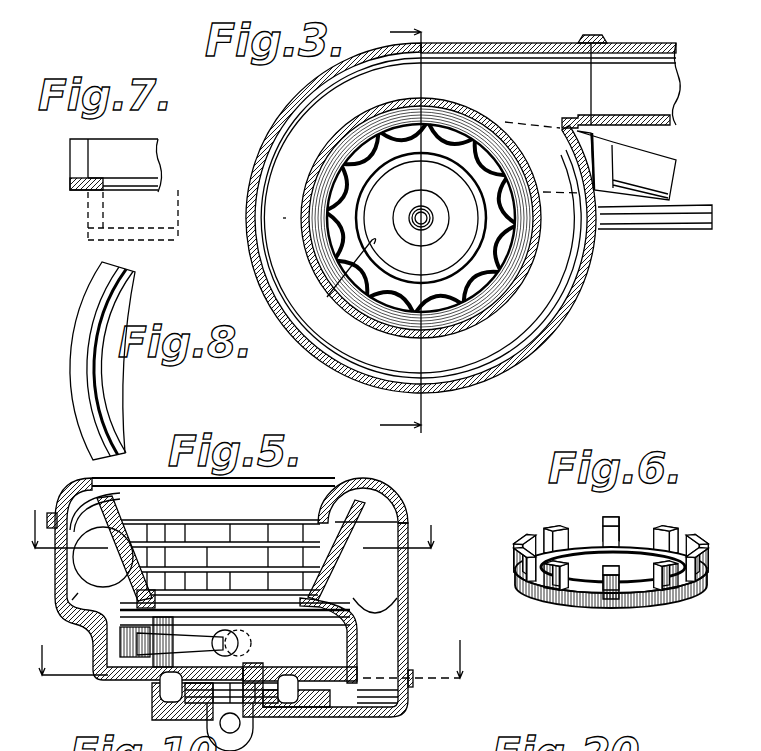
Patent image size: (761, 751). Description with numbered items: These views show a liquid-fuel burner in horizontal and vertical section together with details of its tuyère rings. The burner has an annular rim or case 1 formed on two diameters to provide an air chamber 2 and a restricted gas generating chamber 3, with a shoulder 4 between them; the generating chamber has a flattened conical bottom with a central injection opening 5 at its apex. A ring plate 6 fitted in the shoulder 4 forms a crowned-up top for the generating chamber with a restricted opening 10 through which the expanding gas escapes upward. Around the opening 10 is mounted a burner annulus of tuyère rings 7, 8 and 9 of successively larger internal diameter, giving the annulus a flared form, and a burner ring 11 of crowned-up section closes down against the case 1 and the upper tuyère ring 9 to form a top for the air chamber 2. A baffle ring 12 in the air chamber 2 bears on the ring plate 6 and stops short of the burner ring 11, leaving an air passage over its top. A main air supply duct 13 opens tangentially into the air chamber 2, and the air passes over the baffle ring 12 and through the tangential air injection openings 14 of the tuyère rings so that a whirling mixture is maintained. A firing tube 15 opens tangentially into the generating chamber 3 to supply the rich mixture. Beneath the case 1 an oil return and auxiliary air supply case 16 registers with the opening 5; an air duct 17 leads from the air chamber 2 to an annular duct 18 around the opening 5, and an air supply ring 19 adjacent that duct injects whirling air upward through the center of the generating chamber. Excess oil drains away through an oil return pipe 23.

In FIG. 3, the annular rim or case 1 is at (520, 362).
In FIG. 5, the annular rim or case 1 is at (92, 610).
In FIG. 3, the air chamber 2 is at (284, 218).
In FIG. 5, the air chamber 2 is at (78, 593).
In FIG. 5, the gas generating chamber 3 is at (92, 697).
In FIG. 5, the shoulder 4 is at (110, 623).
In FIG. 3, the injection opening 5 is at (452, 216).
In FIG. 5, the injection opening 5 is at (230, 640).
In FIG. 5, the ring plate 6 is at (347, 610).
In FIG. 7, the tuyère ring 7 is at (98, 207).
In FIG. 6, the tuyère ring 7 is at (633, 600).
In FIG. 5, the tuyère ring 7 is at (302, 583).
In FIG. 3, the tuyère ring 8 is at (458, 292).
In FIG. 7, the tuyère ring 8 is at (77, 151).
In FIG. 8, the tuyère ring 8 is at (82, 310).
In FIG. 5, the tuyère ring 8 is at (312, 560).
In FIG. 5, the tuyère ring 9 is at (312, 532).
In FIG. 3, the opening 10 is at (342, 280).
In FIG. 5, the opening 10 is at (305, 610).
In FIG. 5, the burner ring 11 is at (372, 483).
In FIG. 3, the baffle ring 12 is at (318, 146).
In FIG. 5, the baffle ring 12 is at (365, 507).
In FIG. 3, the main air supply duct 13 is at (647, 98).
In FIG. 5, the main air supply duct 13 is at (62, 572).
In FIG. 3, the air injection openings 14 is at (333, 238).
In FIG. 6, the air injection openings 14 is at (654, 527).
In FIG. 5, the air injection openings 14 is at (153, 530).
In FIG. 3, the firing tube 15 is at (648, 179).
In FIG. 5, the firing tube 15 is at (153, 684).
In FIG. 3, the oil return and auxiliary air supply case 16 is at (412, 198).
In FIG. 5, the air duct 17 is at (358, 698).
In FIG. 5, the annular duct 18 is at (288, 697).
In FIG. 5, the air supply ring 19 is at (241, 683).
In FIG. 3, the oil return pipe 23 is at (698, 218).